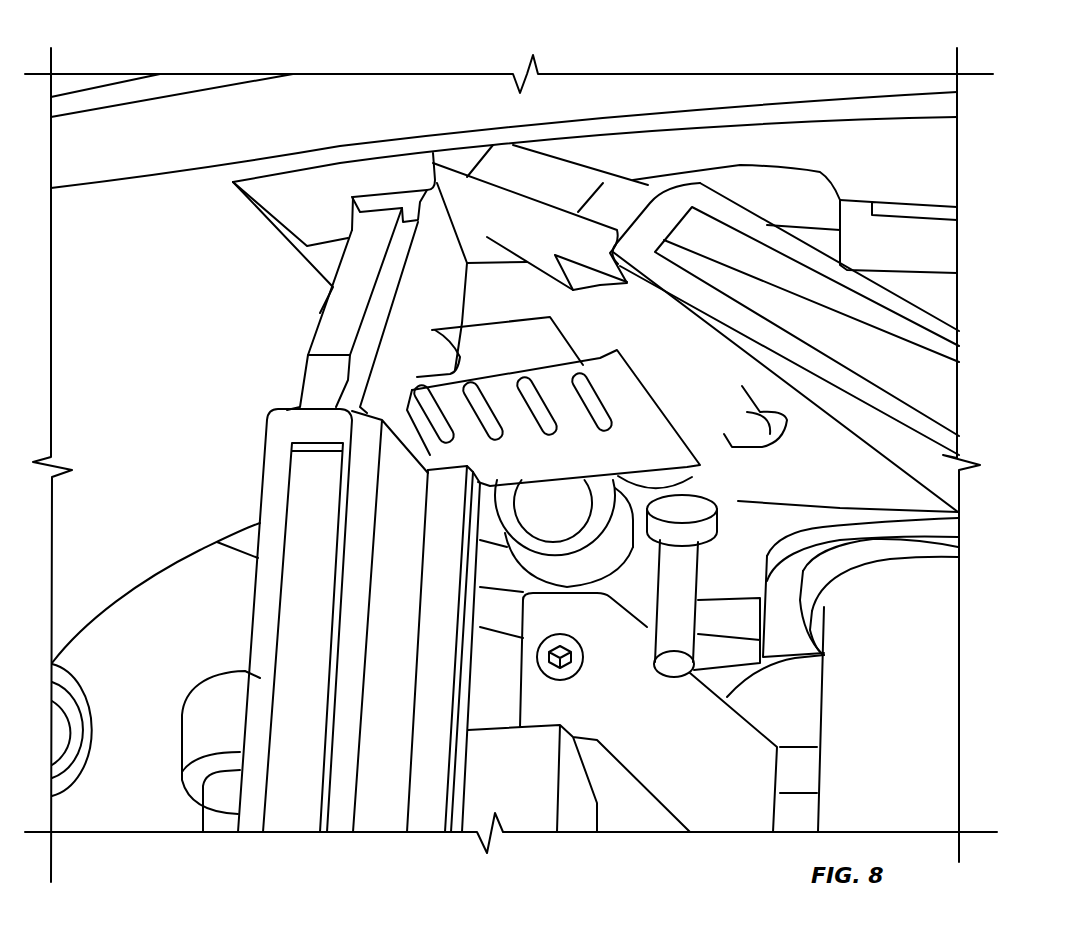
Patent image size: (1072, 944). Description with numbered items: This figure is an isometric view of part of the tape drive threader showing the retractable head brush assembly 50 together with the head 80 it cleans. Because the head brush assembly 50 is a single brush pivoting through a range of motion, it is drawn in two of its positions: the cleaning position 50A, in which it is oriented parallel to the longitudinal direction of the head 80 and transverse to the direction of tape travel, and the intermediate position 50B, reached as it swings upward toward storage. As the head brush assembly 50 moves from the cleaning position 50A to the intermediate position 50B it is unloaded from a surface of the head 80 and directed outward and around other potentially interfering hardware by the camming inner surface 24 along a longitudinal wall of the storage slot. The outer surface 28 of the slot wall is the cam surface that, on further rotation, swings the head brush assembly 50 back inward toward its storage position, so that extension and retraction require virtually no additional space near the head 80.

The inner surface 24 is at (562, 301).
The outer surface 28 is at (780, 123).
The head brush assembly 50 is at (940, 167).
The cleaning position 50A is at (293, 812).
The intermediate position 50B is at (940, 392).
The head 80 is at (437, 735).